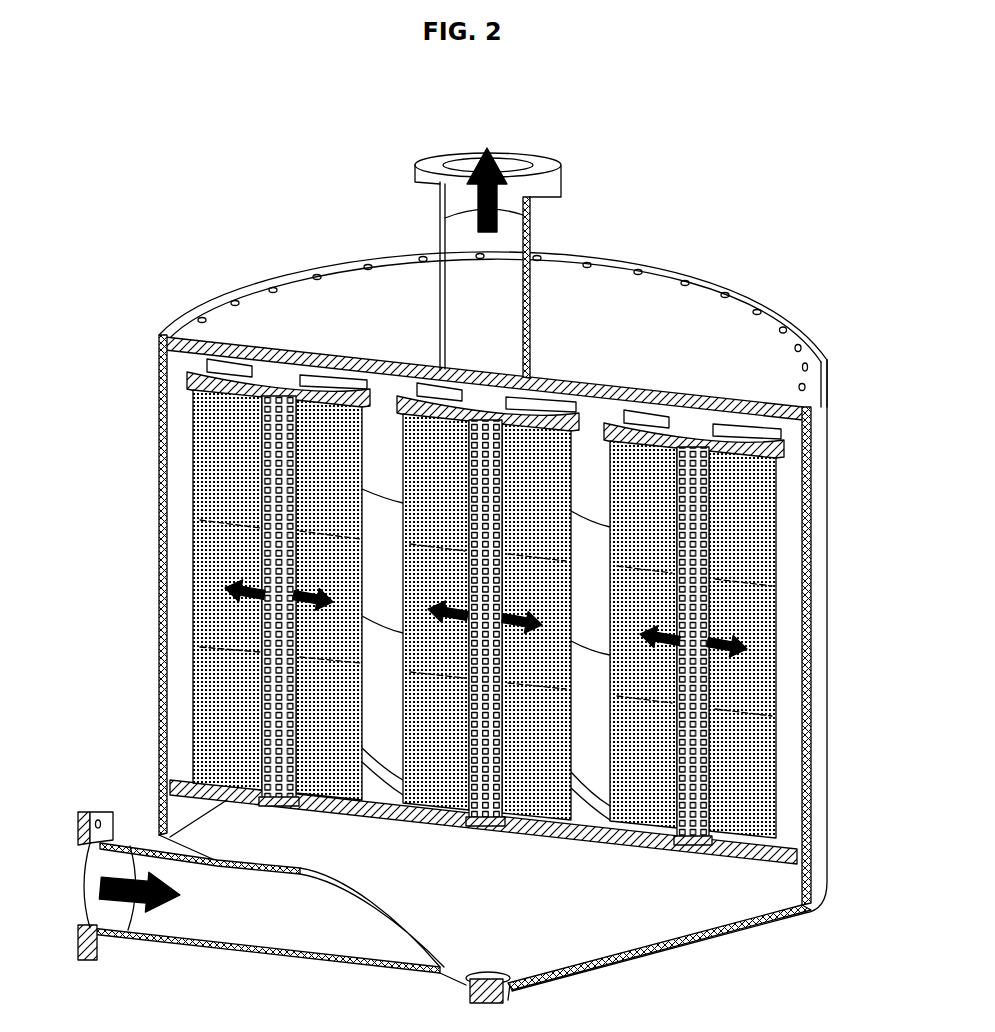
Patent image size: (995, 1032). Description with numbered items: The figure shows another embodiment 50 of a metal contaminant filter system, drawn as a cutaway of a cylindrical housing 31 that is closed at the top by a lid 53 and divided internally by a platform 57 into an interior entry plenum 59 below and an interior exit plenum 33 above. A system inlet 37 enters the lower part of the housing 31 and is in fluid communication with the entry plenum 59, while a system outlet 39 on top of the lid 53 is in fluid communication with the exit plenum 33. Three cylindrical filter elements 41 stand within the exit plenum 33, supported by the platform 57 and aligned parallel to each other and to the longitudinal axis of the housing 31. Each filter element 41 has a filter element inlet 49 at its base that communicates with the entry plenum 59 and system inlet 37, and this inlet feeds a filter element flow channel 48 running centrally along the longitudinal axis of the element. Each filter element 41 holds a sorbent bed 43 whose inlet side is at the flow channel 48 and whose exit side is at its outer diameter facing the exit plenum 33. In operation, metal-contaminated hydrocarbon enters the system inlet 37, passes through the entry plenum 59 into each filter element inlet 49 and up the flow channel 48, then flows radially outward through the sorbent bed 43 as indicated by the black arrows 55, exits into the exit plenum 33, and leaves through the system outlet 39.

The housing 31 is at (820, 520).
The interior exit plenum 33 is at (235, 582).
The system inlet 37 is at (98, 887).
The system outlet 39 is at (495, 165).
The cylindrical filter element 41 is at (778, 683).
The sorbent bed 43 is at (228, 492).
The filter element flow channel 48 is at (263, 693).
The filter element inlet 49 is at (485, 832).
The filter system embodiment 50 is at (465, 571).
The lid 53 is at (237, 325).
The black arrows 55 is at (222, 584).
The platform 57 is at (760, 863).
The interior entry plenum 59 is at (617, 927).